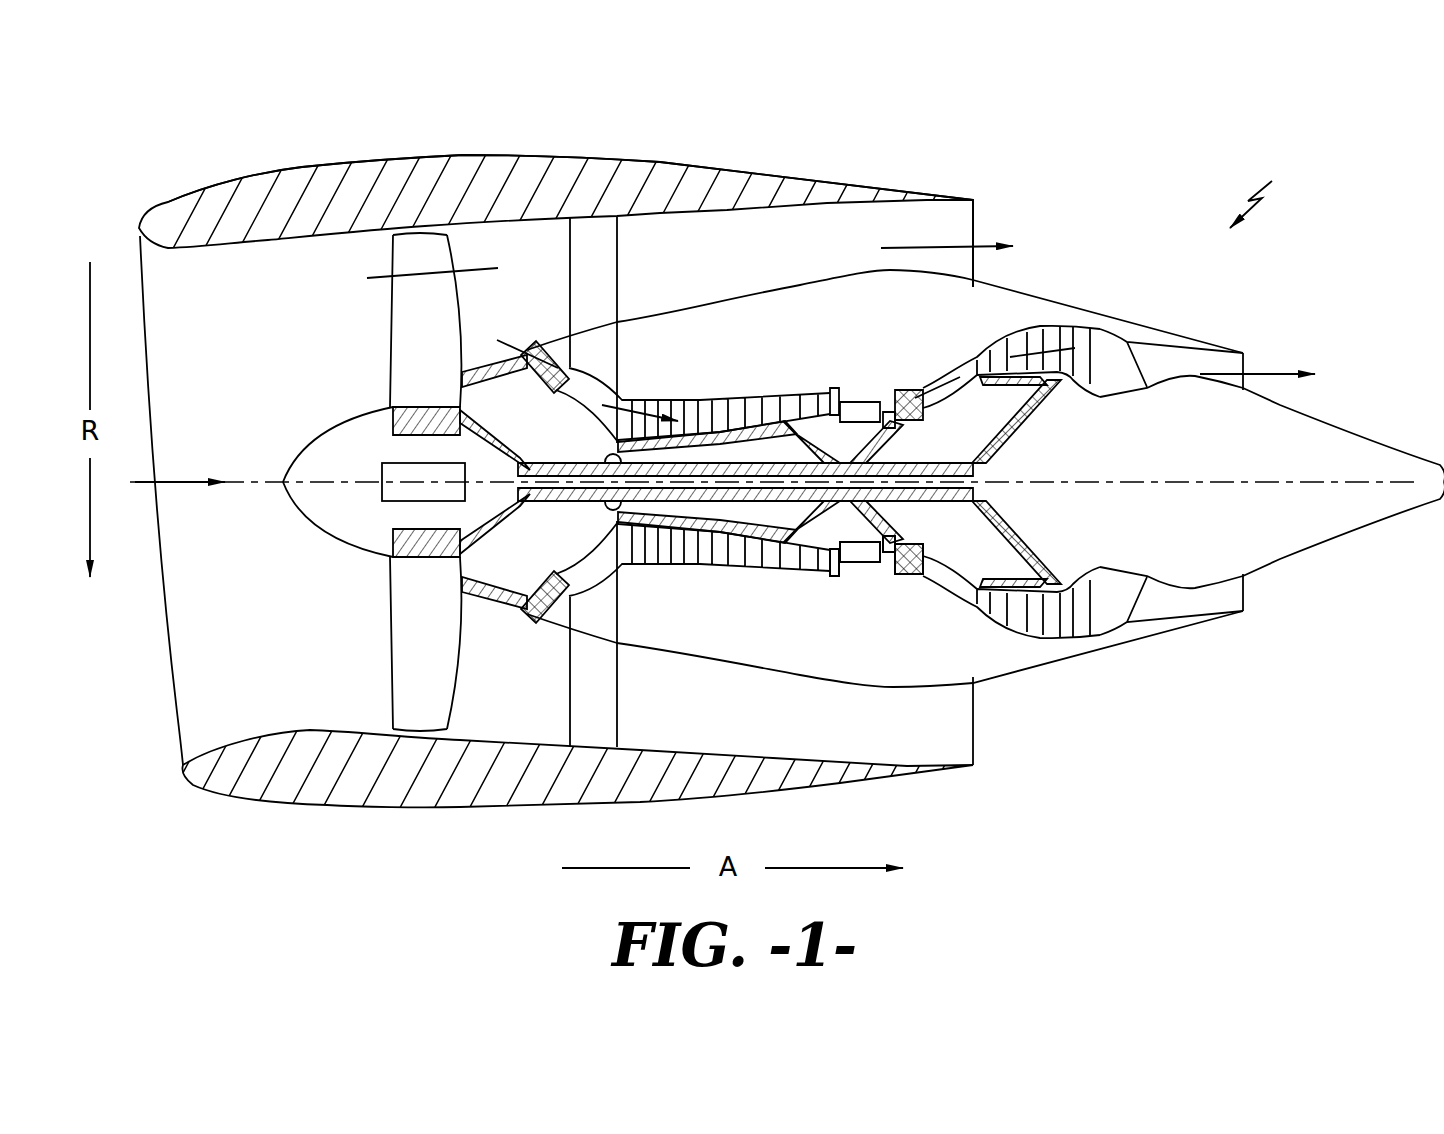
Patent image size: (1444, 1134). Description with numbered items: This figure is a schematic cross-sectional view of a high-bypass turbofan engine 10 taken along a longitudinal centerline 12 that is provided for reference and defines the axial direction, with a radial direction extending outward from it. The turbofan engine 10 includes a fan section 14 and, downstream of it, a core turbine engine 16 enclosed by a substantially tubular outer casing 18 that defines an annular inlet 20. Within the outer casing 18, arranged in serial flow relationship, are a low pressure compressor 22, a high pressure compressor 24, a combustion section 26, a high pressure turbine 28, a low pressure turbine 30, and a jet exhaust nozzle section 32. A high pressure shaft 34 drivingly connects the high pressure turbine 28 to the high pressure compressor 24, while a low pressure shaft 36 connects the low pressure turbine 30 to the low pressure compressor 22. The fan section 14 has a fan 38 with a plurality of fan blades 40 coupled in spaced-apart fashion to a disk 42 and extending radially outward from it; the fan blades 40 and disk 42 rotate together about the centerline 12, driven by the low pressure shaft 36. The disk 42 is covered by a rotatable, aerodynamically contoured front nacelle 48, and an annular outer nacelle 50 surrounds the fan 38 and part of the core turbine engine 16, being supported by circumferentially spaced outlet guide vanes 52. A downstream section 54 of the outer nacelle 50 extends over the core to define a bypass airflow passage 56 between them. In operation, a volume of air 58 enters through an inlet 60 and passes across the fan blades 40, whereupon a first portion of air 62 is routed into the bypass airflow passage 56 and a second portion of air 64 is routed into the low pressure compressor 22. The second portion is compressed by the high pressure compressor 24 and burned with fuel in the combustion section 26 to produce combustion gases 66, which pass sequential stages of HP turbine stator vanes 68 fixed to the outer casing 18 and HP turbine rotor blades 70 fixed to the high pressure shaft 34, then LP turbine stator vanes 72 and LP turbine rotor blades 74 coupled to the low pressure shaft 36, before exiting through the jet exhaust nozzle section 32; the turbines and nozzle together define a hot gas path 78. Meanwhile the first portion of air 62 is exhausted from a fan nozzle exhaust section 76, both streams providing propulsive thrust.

The turbofan engine 10 is at (1270, 191).
The longitudinal centerline 12 is at (1153, 480).
The fan section 14 is at (477, 133).
The core turbine engine 16 is at (793, 352).
The outer casing 18 is at (817, 677).
The annular inlet 20 is at (513, 610).
The low pressure compressor 22 is at (582, 600).
The high pressure compressor 24 is at (650, 560).
The combustion section 26 is at (843, 575).
The high pressure turbine 28 is at (935, 572).
The low pressure turbine 30 is at (1077, 640).
The jet exhaust nozzle section 32 is at (1243, 358).
The high pressure shaft 34 is at (905, 426).
The low pressure shaft 36 is at (573, 458).
The fan 38 is at (377, 323).
The fan blades 40 is at (387, 673).
The disk 42 is at (393, 417).
The front nacelle 48 is at (313, 450).
The outer nacelle 50 is at (460, 810).
The outlet guide vanes 52 is at (623, 240).
The downstream section 54 is at (775, 166).
The bypass airflow passage 56 is at (770, 263).
The volume of air 58 is at (175, 470).
The inlet 60 is at (175, 720).
The first portion of air 62 is at (905, 243).
The second portion of air 64 is at (637, 403).
The combustion gases 66 is at (1260, 372).
The HP turbine stator vanes 68 is at (890, 578).
The HP turbine rotor blades 70 is at (910, 580).
The LP turbine stator vanes 72 is at (978, 615).
The LP turbine rotor blades 74 is at (993, 622).
The fan nozzle exhaust section 76 is at (975, 223).
The hot gas path 78 is at (966, 362).